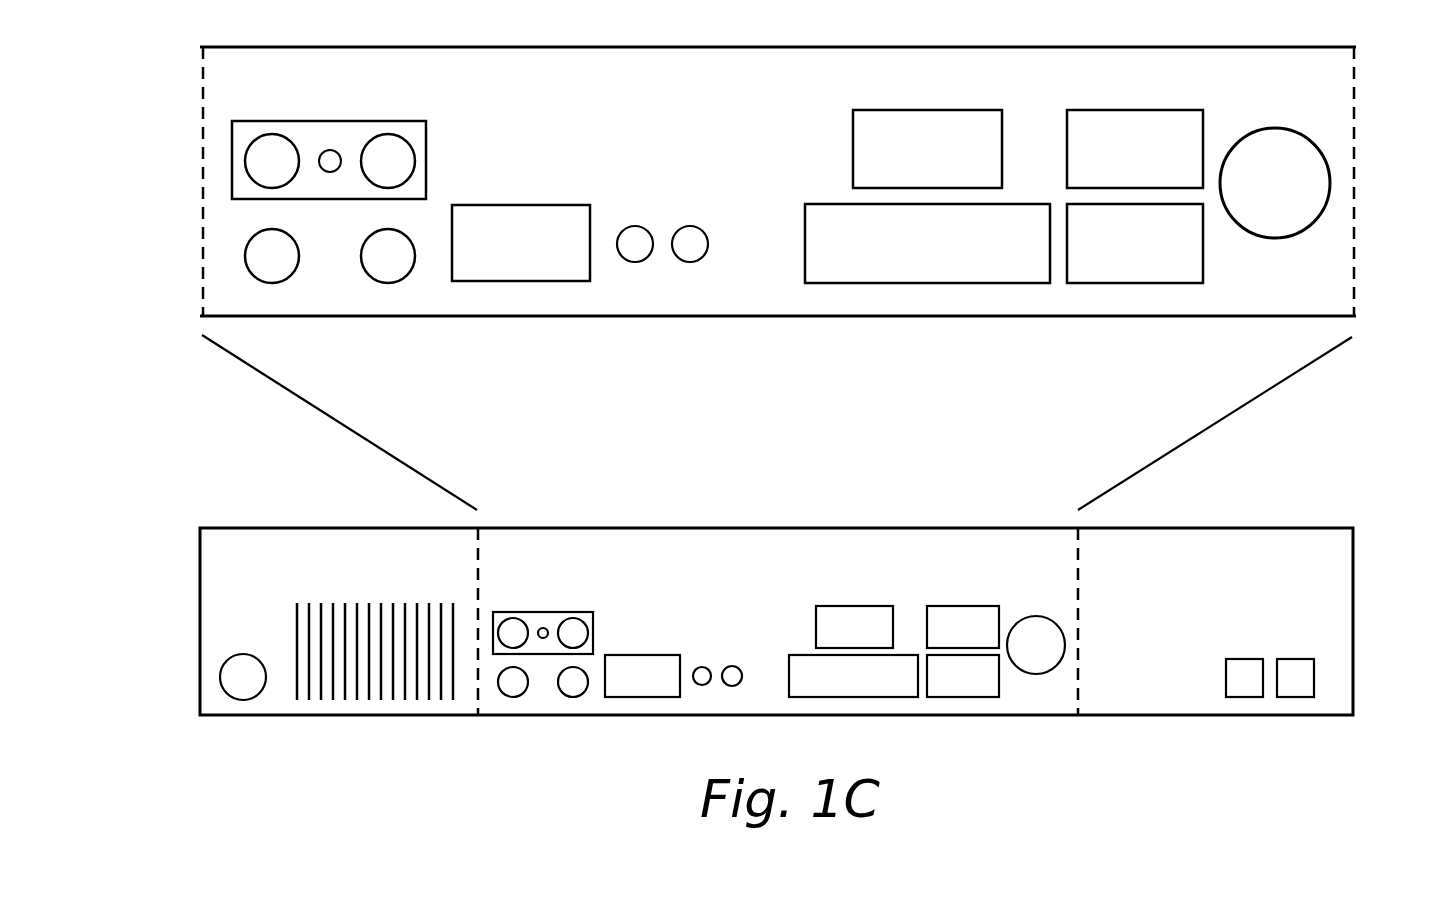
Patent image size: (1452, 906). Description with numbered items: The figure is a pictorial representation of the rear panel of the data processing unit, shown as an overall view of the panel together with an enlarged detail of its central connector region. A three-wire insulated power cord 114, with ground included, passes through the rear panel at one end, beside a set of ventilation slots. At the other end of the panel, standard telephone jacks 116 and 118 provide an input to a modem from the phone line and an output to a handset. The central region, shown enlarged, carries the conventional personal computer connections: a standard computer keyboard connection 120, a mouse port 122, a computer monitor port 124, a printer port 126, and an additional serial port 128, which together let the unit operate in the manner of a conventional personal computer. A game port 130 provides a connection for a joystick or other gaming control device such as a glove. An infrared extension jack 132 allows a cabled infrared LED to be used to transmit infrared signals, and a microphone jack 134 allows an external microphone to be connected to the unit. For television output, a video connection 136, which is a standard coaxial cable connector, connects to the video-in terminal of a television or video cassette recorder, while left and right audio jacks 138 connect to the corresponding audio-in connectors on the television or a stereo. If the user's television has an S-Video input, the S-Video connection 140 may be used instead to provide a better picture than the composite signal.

The power cord 114 is at (220, 686).
The telephone jack 116 is at (1256, 618).
The telephone jack 118 is at (1300, 659).
The computer keyboard connection 120 is at (1330, 180).
The mouse port 122 is at (1167, 110).
The computer monitor port 124 is at (965, 110).
The printer port 126 is at (860, 283).
The serial port 128 is at (1118, 283).
The game port 130 is at (552, 205).
The infrared extension jack 132 is at (635, 226).
The microphone jack 134 is at (708, 247).
The video connection 136 is at (415, 161).
The left and right audio jacks 138 is at (252, 183).
The S-Video connection 140 is at (372, 233).